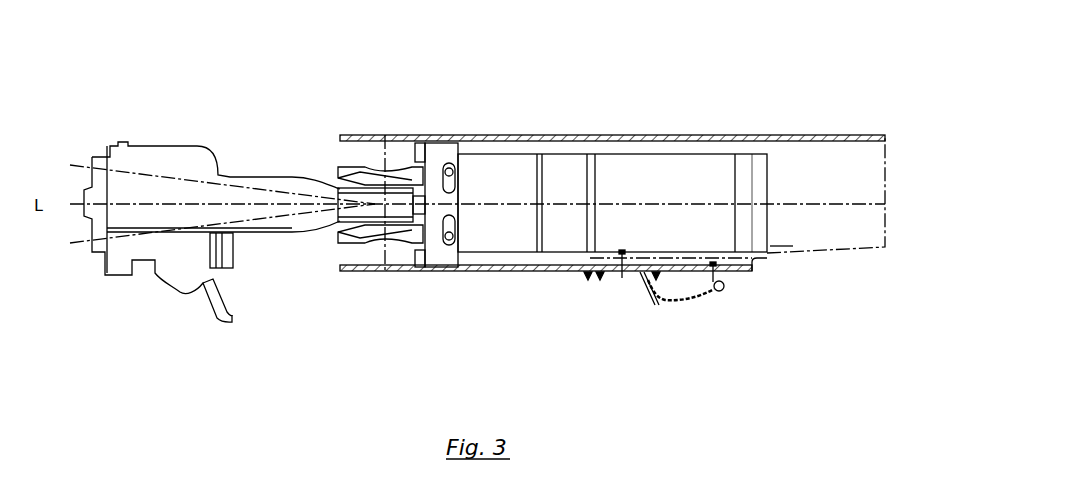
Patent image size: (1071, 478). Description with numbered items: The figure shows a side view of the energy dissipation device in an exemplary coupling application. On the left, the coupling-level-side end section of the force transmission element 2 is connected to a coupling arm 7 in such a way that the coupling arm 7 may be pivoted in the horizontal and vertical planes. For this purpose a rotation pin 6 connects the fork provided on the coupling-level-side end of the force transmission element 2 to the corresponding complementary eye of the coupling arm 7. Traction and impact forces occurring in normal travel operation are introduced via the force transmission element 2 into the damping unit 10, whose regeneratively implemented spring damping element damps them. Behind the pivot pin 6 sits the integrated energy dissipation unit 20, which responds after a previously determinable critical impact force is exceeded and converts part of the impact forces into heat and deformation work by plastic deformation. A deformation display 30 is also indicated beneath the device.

The coupling arm 7 is at (212, 179).
The rotation pin 6 is at (398, 272).
The force transmission element 2 is at (454, 251).
The damping unit 10 is at (612, 261).
The energy dissipation unit 20 is at (752, 97).
The deformation display 30 is at (658, 339).